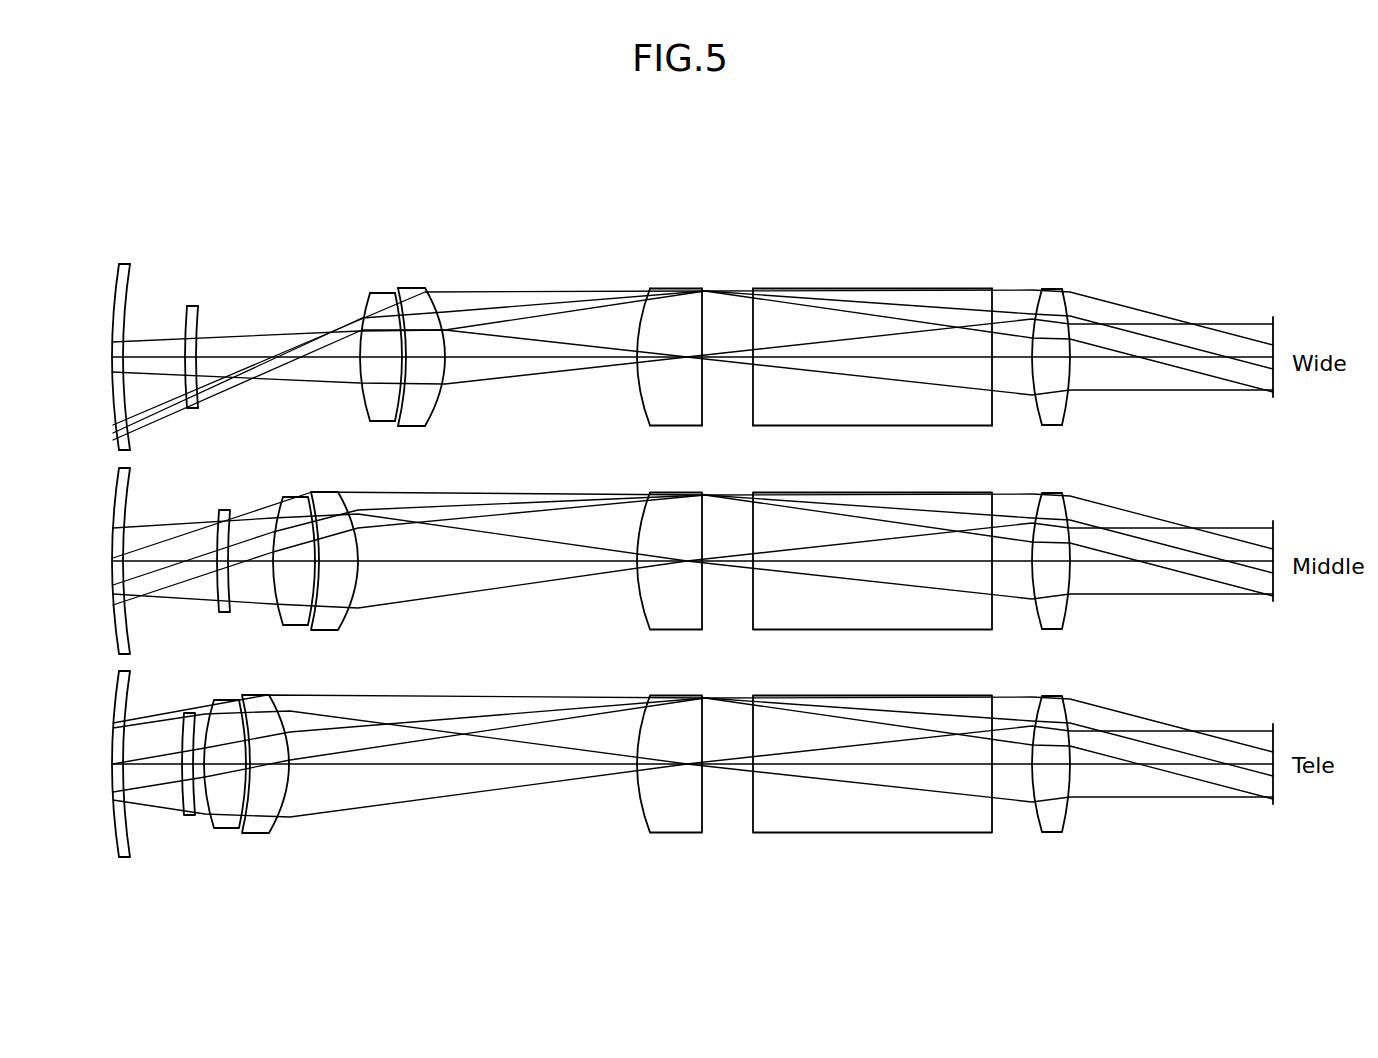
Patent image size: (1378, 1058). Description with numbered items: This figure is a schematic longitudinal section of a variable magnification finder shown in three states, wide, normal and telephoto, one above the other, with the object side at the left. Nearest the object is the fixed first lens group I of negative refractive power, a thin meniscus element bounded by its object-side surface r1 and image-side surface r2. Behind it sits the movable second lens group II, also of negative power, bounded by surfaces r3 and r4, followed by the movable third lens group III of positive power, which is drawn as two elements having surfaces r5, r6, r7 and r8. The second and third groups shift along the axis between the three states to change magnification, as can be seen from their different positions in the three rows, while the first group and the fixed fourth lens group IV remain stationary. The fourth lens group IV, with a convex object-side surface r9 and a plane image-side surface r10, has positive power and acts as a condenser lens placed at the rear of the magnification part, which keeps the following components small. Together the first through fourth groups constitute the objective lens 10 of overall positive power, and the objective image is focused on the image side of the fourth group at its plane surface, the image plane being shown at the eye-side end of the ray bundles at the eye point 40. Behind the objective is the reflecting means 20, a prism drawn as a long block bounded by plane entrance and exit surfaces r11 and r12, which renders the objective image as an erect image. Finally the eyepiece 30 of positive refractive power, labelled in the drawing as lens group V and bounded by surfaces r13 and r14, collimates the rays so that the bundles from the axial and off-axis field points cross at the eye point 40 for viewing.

The objective lens 10 is at (112, 193).
The reflecting means 20 is at (735, 234).
The eyepiece 30 is at (1093, 179).
The image plane 40 is at (1272, 284).
The first lens group I is at (95, 234).
The second lens group II is at (163, 234).
The third lens group III is at (345, 234).
The fourth lens group IV is at (623, 234).
The fifth lens group (eyepiece) V is at (1017, 215).
The first lens surface r1 is at (115, 294).
The second lens surface r2 is at (130, 294).
The third lens surface r3 is at (185, 323).
The fourth lens surface r4 is at (198, 323).
The fifth lens surface r5 is at (363, 321).
The sixth lens surface r6 is at (400, 323).
The seventh lens surface r7 is at (407, 308).
The eighth lens surface r8 is at (435, 307).
The ninth lens surface r9 is at (644, 306).
The tenth lens surface r10 is at (703, 313).
The eleventh surface r11 is at (753, 322).
The twelfth surface r12 is at (993, 327).
The thirteenth lens surface r13 is at (1034, 307).
The fourteenth lens surface r14 is at (1068, 298).